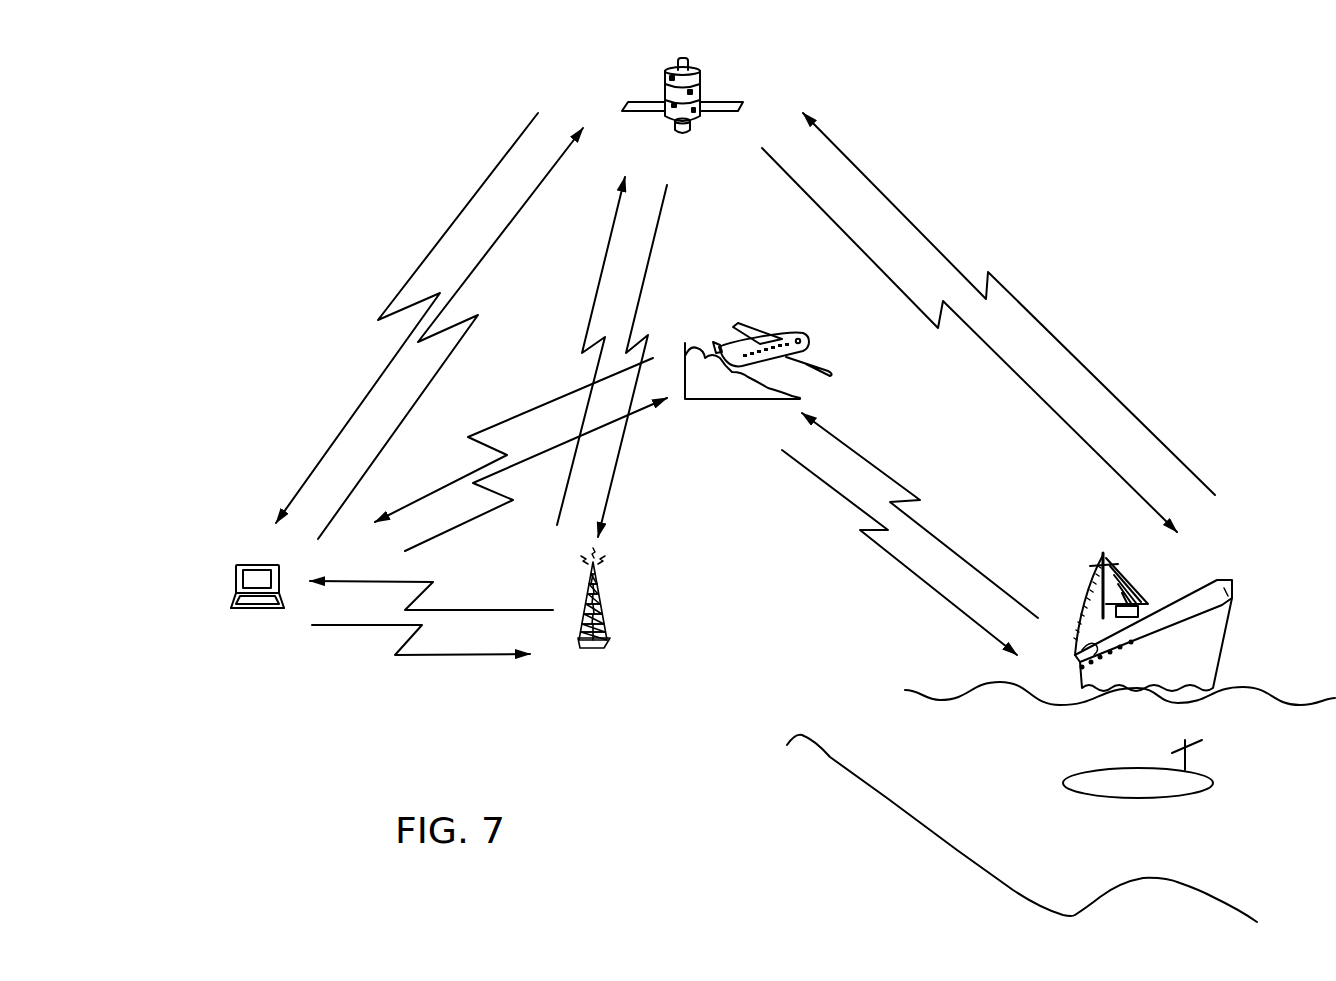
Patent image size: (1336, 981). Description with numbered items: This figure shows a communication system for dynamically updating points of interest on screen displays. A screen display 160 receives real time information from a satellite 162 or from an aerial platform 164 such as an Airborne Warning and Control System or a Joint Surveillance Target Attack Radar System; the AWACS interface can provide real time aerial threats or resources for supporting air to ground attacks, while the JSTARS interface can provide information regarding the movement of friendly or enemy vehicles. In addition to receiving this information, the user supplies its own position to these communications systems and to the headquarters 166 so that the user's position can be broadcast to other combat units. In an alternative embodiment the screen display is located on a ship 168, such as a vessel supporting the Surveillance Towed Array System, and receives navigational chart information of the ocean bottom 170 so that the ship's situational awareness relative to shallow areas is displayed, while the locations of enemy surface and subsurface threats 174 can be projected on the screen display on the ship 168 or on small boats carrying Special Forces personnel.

The screen display 160 is at (252, 563).
The satellite 162 is at (722, 100).
The aerial platform 164 is at (822, 360).
The headquarters 166 is at (608, 612).
The ship 168 is at (1202, 580).
The ocean bottom 170 is at (885, 798).
The enemy surface and subsurface threats 174 is at (1141, 768).